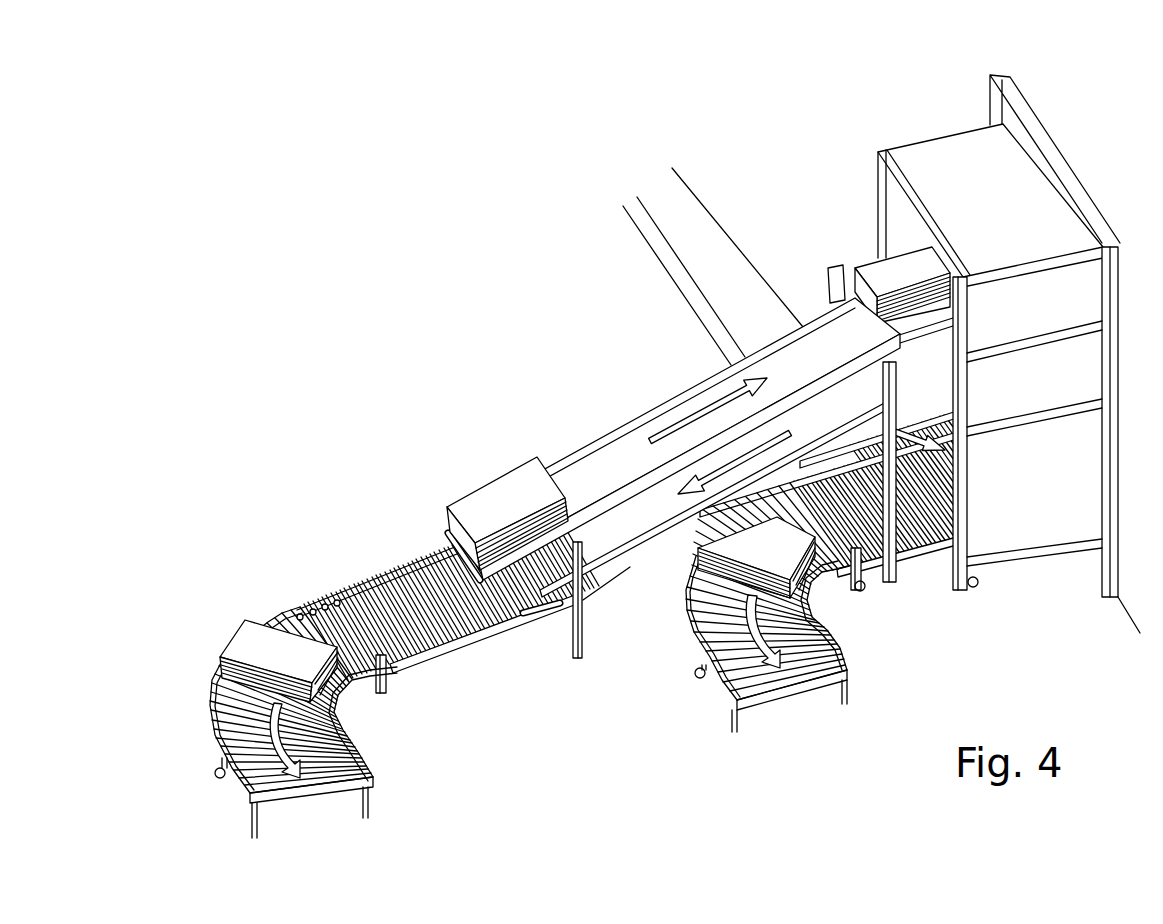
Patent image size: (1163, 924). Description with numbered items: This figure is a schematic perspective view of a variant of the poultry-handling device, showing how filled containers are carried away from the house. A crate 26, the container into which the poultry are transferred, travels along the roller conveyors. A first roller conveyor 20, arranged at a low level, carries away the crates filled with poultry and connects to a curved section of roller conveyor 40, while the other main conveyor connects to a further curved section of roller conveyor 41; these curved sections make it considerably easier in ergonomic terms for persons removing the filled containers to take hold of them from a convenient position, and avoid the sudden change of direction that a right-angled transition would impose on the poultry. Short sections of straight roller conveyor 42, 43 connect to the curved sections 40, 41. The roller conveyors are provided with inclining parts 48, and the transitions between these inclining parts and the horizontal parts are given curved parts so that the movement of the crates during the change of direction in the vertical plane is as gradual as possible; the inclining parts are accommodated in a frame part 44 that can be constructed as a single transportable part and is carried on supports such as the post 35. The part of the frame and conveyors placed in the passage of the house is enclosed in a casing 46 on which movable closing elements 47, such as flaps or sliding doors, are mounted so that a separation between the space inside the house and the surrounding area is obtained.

The first roller conveyor 20 is at (913, 540).
The crate 26 is at (494, 492).
The support post 35 is at (633, 562).
The curved section of roller conveyor 40 is at (294, 590).
The curved section of roller conveyor 41 is at (678, 556).
The short section of straight roller conveyor 42 is at (374, 749).
The short section of straight roller conveyor 43 is at (794, 697).
The frame part 44 is at (841, 206).
The casing 46 is at (916, 102).
The movable closing elements 47 is at (866, 190).
The inclining parts 48 is at (463, 643).